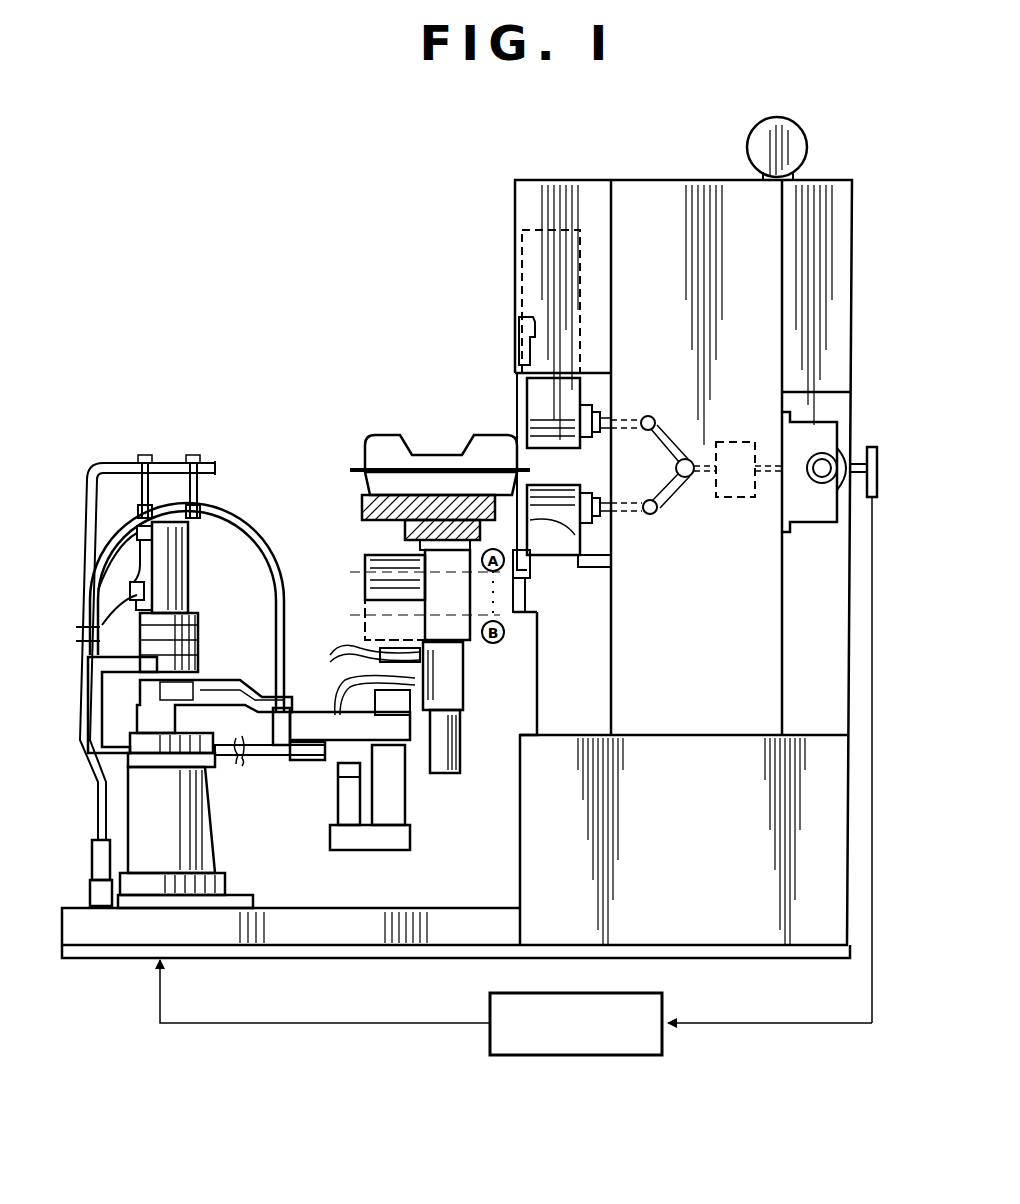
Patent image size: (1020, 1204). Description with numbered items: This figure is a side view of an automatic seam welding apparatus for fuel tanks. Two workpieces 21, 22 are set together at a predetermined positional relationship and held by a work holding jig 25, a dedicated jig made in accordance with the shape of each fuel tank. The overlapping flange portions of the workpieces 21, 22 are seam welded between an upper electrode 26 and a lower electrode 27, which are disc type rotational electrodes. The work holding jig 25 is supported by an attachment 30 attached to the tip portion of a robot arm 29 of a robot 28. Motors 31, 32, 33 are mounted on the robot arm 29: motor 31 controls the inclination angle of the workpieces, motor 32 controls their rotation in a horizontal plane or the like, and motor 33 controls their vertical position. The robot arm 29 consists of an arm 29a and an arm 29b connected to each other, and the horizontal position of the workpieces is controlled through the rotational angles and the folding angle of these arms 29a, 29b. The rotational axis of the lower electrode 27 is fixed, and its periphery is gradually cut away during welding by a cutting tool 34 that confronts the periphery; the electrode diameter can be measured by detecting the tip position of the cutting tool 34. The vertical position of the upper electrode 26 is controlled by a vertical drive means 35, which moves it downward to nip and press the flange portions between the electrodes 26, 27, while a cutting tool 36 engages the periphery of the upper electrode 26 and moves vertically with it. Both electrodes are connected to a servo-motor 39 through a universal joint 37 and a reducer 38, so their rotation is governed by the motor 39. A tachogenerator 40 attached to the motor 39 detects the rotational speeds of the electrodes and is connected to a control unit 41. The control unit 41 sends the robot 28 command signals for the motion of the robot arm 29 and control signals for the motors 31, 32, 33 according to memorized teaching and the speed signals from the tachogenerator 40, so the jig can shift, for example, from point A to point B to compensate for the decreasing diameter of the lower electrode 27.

The workpiece 21 is at (365, 456).
The workpiece 22 is at (375, 482).
The work holding jig 25 is at (385, 515).
The upper electrode 26 is at (520, 420).
The lower electrode 27 is at (583, 518).
The robot 28 is at (85, 762).
The robot arm 29 is at (307, 767).
The arm 29a is at (270, 765).
The arm 29b is at (335, 715).
The attachment 30 is at (552, 534).
The motor 31 is at (365, 590).
The motor 32 is at (463, 742).
The motor 33 is at (340, 800).
The cutting tool 34 is at (533, 565).
The vertical drive means 35 is at (520, 245).
The cutting tool 36 is at (520, 383).
The universal joint 37 is at (684, 458).
The reducer 38 is at (735, 442).
The motor 39 is at (840, 460).
The tachogenerator 40 is at (878, 488).
The control unit 41 is at (573, 1058).